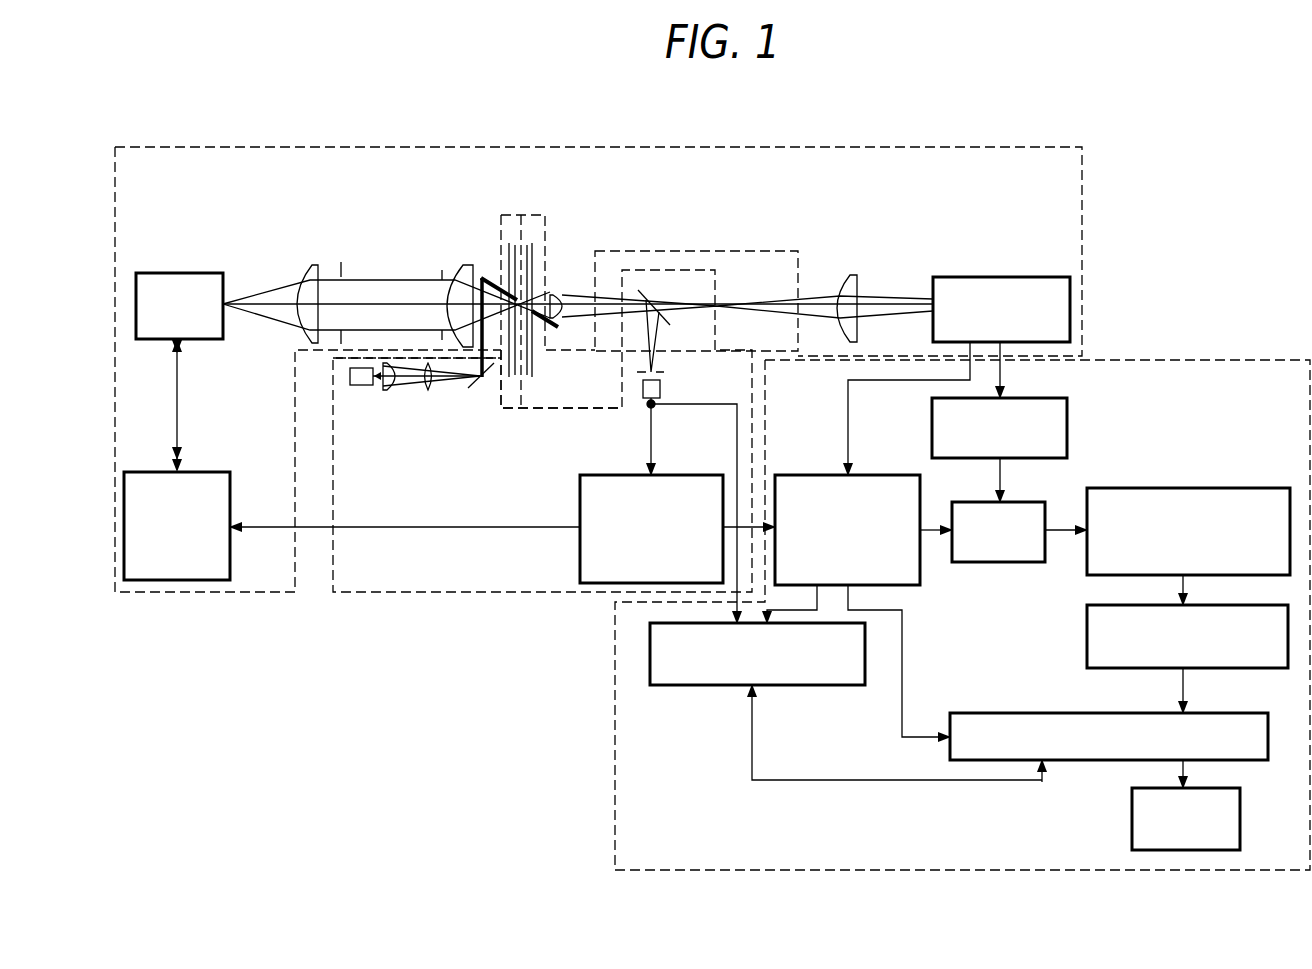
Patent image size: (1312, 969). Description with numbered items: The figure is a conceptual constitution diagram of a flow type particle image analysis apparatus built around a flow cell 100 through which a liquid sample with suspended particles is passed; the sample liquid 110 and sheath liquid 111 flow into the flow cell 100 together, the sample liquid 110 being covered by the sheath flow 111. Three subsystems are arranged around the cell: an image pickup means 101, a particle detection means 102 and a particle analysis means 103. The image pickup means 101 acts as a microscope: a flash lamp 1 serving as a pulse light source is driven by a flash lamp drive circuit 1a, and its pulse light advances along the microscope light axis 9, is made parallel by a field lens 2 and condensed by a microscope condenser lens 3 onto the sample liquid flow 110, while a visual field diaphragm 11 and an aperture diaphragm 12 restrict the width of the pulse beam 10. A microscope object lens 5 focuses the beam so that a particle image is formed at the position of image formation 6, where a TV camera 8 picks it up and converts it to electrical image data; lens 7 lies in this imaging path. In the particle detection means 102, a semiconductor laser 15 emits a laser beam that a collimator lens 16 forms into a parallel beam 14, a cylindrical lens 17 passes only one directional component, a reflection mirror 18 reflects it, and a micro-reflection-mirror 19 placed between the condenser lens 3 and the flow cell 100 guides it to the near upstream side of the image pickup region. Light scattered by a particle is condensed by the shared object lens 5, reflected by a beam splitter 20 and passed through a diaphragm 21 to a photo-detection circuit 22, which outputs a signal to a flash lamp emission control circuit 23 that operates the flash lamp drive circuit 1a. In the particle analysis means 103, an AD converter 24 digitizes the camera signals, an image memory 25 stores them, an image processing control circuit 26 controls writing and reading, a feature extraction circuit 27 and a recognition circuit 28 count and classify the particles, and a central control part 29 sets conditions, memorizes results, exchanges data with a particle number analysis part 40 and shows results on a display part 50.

The flash lamp 1 is at (188, 272).
The flash lamp drive circuit 1a is at (188, 472).
The field lens 2 is at (314, 265).
The microscope condenser lens 3 is at (463, 265).
The microscope object lens 5 is at (556, 293).
The position of image formation 6 is at (722, 282).
The image forming lens 7 is at (850, 275).
The TV camera 8 is at (1023, 277).
The microscope light axis 9 is at (405, 300).
The pulse beam 10 is at (380, 280).
The visual field diaphragm 11 is at (342, 262).
The aperture diaphragm 12 is at (443, 278).
The parallel beam 14 is at (408, 387).
The semiconductor laser 15 is at (355, 386).
The collimator lens 16 is at (389, 390).
The cylindrical lens 17 is at (430, 390).
The reflection mirror 18 is at (478, 390).
The micro-reflection-mirror 19 is at (482, 278).
The beam splitter 20 is at (645, 290).
The diaphragm 21 is at (660, 372).
The photo-detection circuit 22 is at (662, 388).
The flash lamp emission control circuit 23 is at (672, 475).
The AD converter 24 is at (1025, 398).
The image memory 25 is at (1013, 502).
The image processing control circuit 26 is at (870, 475).
The feature extraction circuit 27 is at (1235, 488).
The recognition circuit 28 is at (1250, 606).
The central control part 29 is at (1215, 713).
The particle number analysis part 40 is at (650, 647).
The display part 50 is at (1240, 802).
The flow cell 100 is at (536, 368).
The image pickup means 101 is at (782, 147).
The particle detection means 102 is at (340, 592).
The particle analysis means 103 is at (615, 762).
The sample liquid 110 is at (522, 392).
The sheath liquid 111 is at (533, 237).